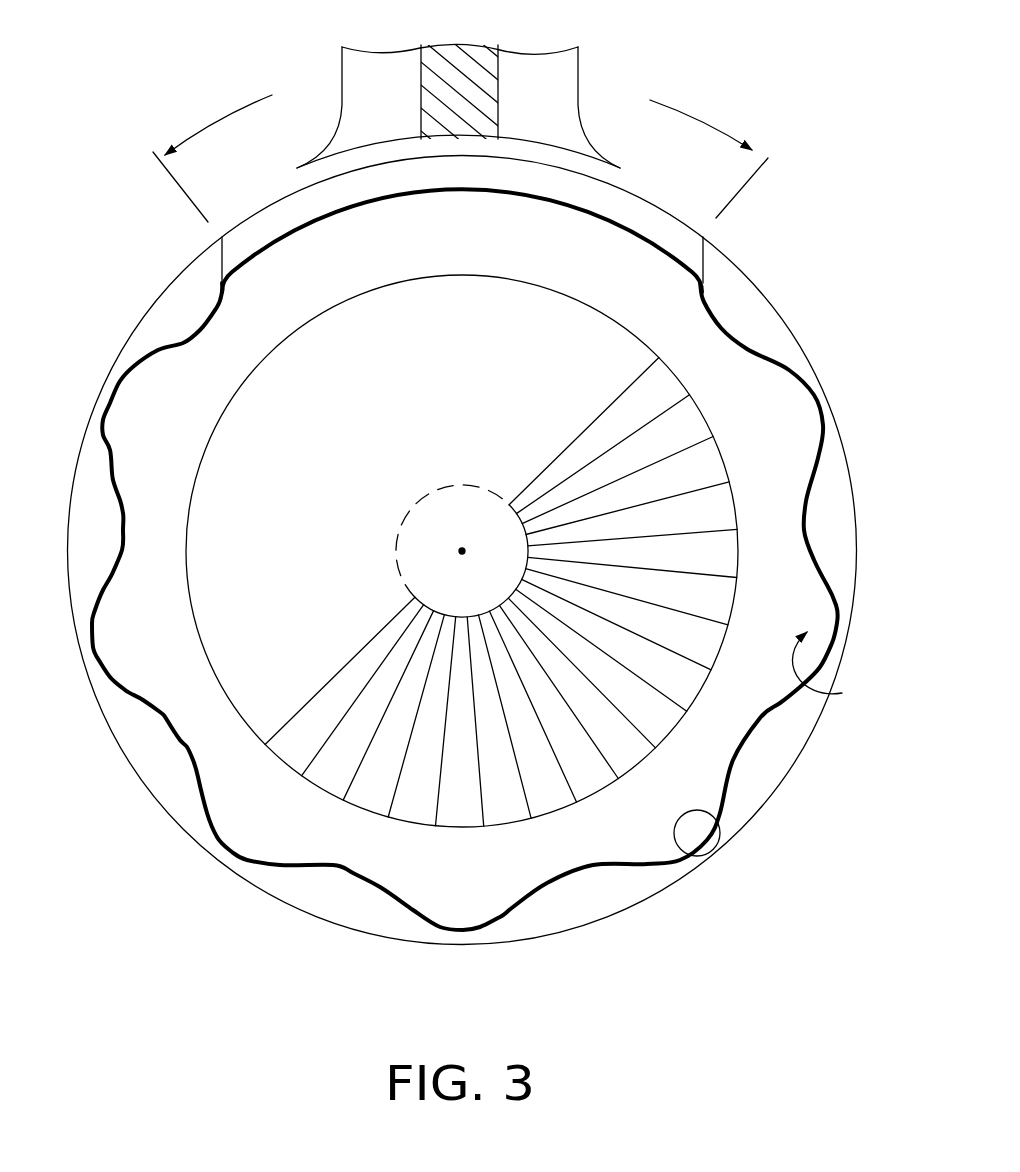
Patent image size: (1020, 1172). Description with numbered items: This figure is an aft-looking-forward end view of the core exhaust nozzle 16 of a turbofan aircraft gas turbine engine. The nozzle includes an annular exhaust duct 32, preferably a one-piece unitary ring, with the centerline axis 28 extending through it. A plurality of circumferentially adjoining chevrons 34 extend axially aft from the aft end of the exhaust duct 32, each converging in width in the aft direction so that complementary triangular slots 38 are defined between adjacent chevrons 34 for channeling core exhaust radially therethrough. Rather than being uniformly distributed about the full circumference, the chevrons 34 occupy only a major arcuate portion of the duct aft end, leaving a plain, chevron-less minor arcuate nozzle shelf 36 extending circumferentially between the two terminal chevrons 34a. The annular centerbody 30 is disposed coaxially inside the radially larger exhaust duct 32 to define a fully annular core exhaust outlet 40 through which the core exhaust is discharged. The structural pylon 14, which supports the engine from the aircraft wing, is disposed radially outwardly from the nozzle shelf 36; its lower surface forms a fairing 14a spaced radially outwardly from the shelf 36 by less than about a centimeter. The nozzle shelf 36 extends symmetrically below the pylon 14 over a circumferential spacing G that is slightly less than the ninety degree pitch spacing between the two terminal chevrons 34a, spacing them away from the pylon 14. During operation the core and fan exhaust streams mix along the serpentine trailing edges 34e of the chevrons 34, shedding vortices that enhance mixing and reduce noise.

The structural pylon 14 is at (550, 74).
The fairing 14a is at (352, 153).
The core exhaust nozzle 16 is at (724, 248).
The centerline axis 28 is at (462, 549).
The annular centerbody 30 is at (516, 389).
The annular exhaust duct 32 is at (185, 270).
The chevrons 34 is at (157, 752).
The terminal chevrons 34a is at (183, 317).
The serpentine trailing edges 34e is at (683, 855).
The nozzle shelf 36 is at (303, 212).
The triangular slots 38 is at (832, 669).
The core exhaust outlet 40 is at (486, 883).
The circumferential spacing G is at (460, 143).